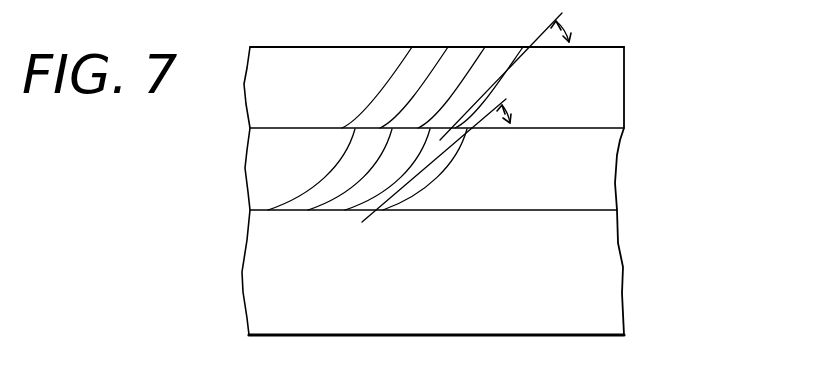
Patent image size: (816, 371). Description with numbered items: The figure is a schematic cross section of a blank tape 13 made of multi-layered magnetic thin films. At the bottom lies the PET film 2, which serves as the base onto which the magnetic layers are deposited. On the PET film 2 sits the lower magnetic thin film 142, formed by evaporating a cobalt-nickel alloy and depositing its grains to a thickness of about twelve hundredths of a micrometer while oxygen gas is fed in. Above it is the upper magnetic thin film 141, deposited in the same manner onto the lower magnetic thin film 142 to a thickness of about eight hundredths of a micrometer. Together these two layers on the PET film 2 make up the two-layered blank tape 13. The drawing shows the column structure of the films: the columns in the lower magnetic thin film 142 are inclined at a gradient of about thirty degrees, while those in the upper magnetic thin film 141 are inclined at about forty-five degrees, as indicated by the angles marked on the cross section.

The blank tape 13 is at (711, 148).
The upper magnetic thin film 141 is at (620, 76).
The lower magnetic thin film 142 is at (615, 180).
The PET film 2 is at (618, 267).